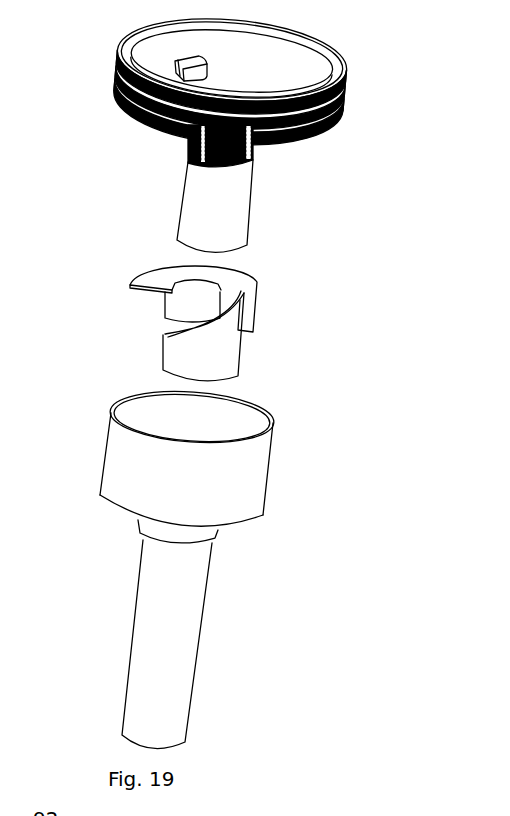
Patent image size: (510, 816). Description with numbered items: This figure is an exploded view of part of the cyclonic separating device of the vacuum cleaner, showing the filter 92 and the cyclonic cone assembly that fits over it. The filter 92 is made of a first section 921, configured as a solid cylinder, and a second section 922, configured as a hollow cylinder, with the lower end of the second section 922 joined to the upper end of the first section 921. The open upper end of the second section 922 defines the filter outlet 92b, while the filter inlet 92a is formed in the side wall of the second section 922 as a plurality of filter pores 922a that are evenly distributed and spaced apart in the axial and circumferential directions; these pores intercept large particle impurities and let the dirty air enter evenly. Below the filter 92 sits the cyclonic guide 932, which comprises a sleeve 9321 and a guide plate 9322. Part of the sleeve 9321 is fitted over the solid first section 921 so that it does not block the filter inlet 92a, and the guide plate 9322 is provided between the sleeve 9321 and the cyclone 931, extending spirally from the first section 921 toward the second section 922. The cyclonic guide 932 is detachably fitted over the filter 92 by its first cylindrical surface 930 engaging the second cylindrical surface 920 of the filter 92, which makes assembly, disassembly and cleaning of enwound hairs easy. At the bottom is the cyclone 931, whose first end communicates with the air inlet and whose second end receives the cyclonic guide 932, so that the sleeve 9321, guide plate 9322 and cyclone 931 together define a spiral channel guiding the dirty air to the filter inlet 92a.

The filter outlet 92b is at (250, 47).
The second cylindrical surface 920 is at (232, 201).
The filter 92 is at (156, 188).
The second section 922 is at (203, 142).
The first section 921 is at (191, 199).
The filter pores 922a is at (252, 142).
The filter inlet 92a is at (303, 183).
The first cylindrical surface 930 is at (176, 485).
The cyclonic guide 932 is at (130, 317).
The guide plate 9322 is at (148, 286).
The sleeve 9321 is at (170, 356).
The cyclone 931 is at (255, 468).